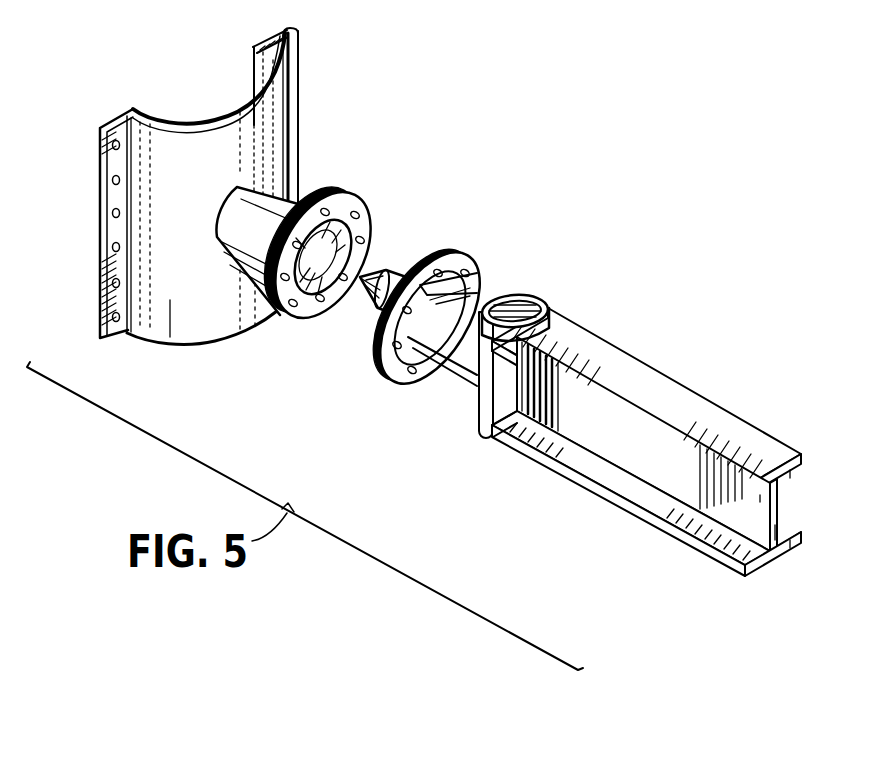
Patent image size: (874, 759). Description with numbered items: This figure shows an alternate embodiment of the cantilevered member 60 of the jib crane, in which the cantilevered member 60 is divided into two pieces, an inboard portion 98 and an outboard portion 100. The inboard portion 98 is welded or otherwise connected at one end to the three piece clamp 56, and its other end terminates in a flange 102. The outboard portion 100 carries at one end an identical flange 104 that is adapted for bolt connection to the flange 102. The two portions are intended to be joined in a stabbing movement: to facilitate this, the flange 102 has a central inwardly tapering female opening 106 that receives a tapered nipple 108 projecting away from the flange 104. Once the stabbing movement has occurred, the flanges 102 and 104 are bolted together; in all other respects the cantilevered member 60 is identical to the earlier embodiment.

The three piece clamp 56 is at (297, 111).
The inboard portion 98 is at (293, 181).
The flange 102 is at (332, 284).
The central inwardly tapering female opening 106 is at (303, 313).
The tapered nipple 108 is at (379, 312).
The flange 104 is at (455, 256).
The outboard portion 100 is at (484, 291).
The cantilevered member 60 is at (449, 221).